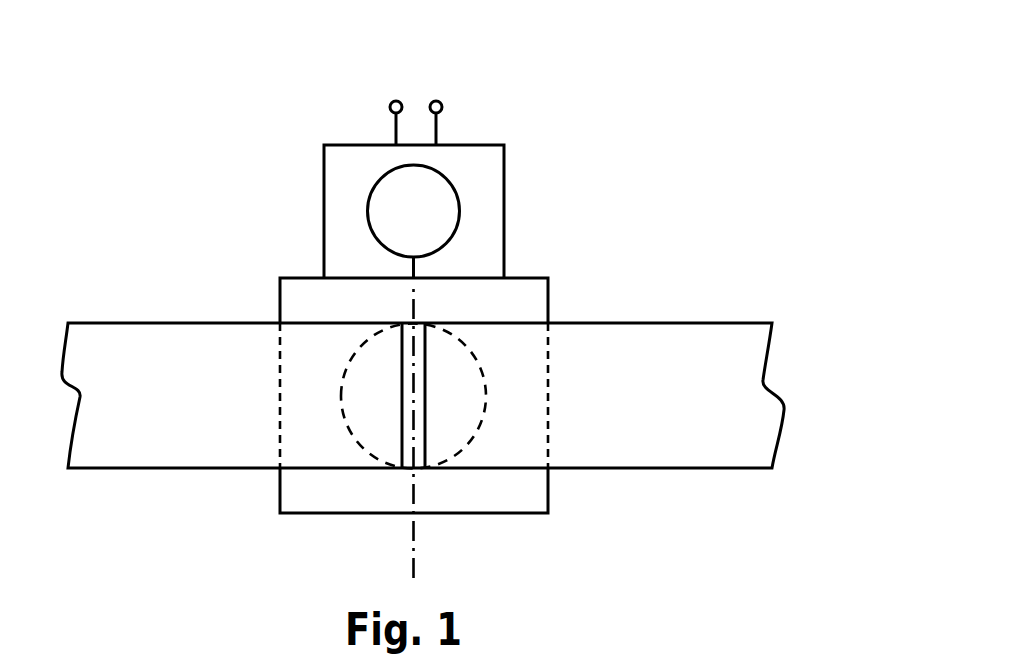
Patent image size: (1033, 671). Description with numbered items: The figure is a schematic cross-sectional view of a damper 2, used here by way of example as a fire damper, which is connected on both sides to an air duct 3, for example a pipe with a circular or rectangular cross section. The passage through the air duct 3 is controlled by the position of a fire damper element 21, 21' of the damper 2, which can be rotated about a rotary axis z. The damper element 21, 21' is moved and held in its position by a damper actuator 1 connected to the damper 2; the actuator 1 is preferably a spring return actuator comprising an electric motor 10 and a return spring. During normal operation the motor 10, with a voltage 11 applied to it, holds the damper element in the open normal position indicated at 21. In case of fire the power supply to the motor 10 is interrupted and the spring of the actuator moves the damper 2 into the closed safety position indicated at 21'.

The damper actuator 1 is at (492, 207).
The electric motor 10 is at (377, 210).
The voltage 11 is at (406, 86).
The damper 2 is at (272, 497).
The fire damper element 21 is at (513, 374).
The fire damper element 21' is at (269, 364).
The air duct 3 is at (125, 452).
The rotary axis z is at (461, 442).